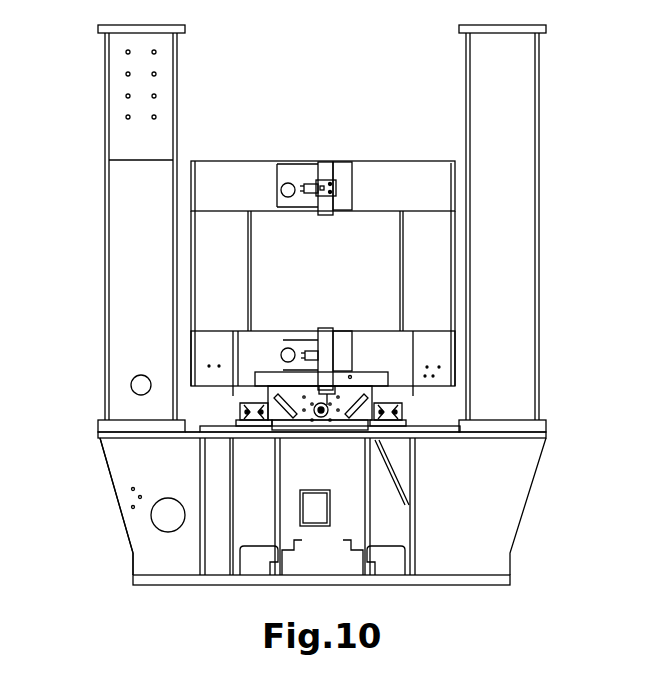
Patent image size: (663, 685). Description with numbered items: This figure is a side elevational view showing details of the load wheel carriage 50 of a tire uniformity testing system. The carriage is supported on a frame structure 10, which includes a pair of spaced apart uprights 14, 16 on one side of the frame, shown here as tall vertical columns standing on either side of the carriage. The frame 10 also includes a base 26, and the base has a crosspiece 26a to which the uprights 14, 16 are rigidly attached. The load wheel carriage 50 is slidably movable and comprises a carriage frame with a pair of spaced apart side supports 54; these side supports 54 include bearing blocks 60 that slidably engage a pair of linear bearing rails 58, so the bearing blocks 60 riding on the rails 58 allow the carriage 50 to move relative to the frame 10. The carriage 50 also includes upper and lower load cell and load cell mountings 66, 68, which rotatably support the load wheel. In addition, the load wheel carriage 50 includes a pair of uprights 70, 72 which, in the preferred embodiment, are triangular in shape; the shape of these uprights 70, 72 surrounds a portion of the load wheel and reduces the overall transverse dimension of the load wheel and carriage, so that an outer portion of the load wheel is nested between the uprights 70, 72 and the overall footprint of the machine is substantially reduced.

The frame structure 10 is at (323, 241).
The upright 14 is at (502, 212).
The upright 16 is at (133, 229).
The base 26 is at (322, 502).
The crosspiece 26a is at (132, 452).
The load wheel carriage 50 is at (330, 153).
The side supports 54 is at (230, 355).
The linear bearing rails 58 is at (257, 424).
The bearing blocks 60 is at (243, 418).
The upper load cell and load cell mounting 66 is at (340, 190).
The lower load cell and load cell mounting 68 is at (342, 352).
The upright 70 is at (413, 271).
The upright 72 is at (227, 271).